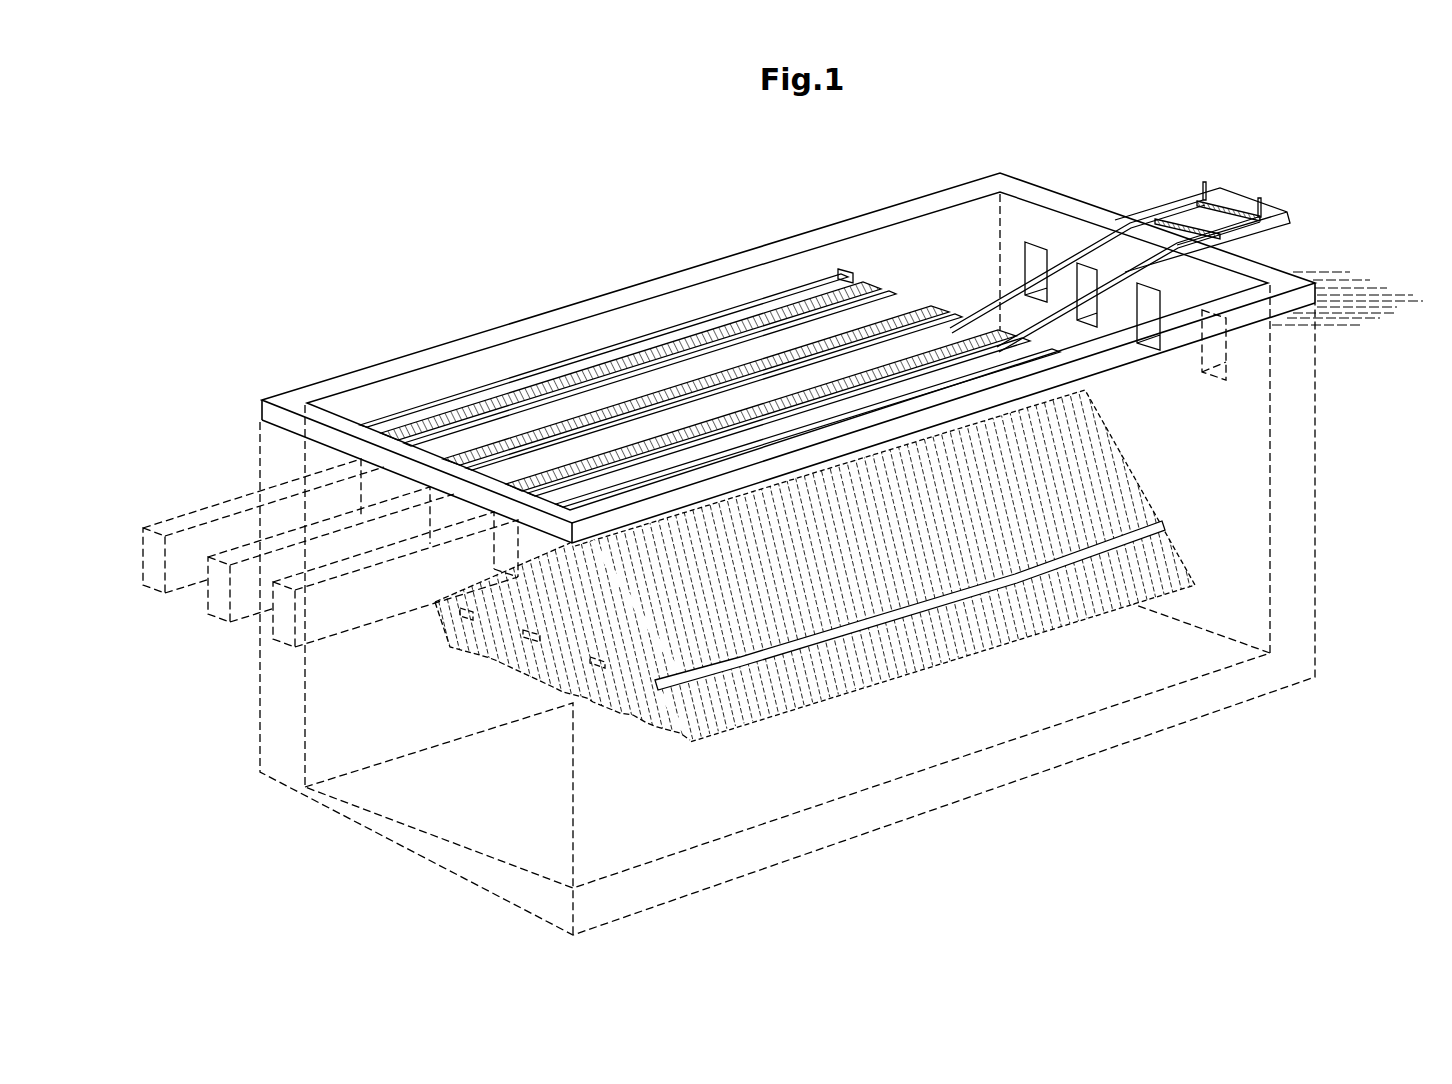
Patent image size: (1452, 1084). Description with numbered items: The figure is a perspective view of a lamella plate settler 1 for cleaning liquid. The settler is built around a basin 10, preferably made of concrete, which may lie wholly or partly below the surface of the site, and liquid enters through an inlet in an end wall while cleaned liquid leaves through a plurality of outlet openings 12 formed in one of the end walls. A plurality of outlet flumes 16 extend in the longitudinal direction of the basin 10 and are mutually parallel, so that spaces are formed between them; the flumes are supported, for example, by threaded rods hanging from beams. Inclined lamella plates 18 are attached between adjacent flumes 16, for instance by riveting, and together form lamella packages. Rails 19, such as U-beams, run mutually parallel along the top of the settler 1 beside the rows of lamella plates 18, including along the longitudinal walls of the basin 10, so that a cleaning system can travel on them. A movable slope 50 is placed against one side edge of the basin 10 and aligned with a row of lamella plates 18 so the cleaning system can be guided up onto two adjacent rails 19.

The lamella plate settler 1 is at (487, 228).
The basin 10 is at (1315, 457).
The outlet openings 12 is at (323, 577).
The outlet flumes 16 is at (567, 413).
The lamella plates 18 is at (1100, 503).
The rails 19 is at (820, 288).
The movable slope 50 is at (1086, 246).